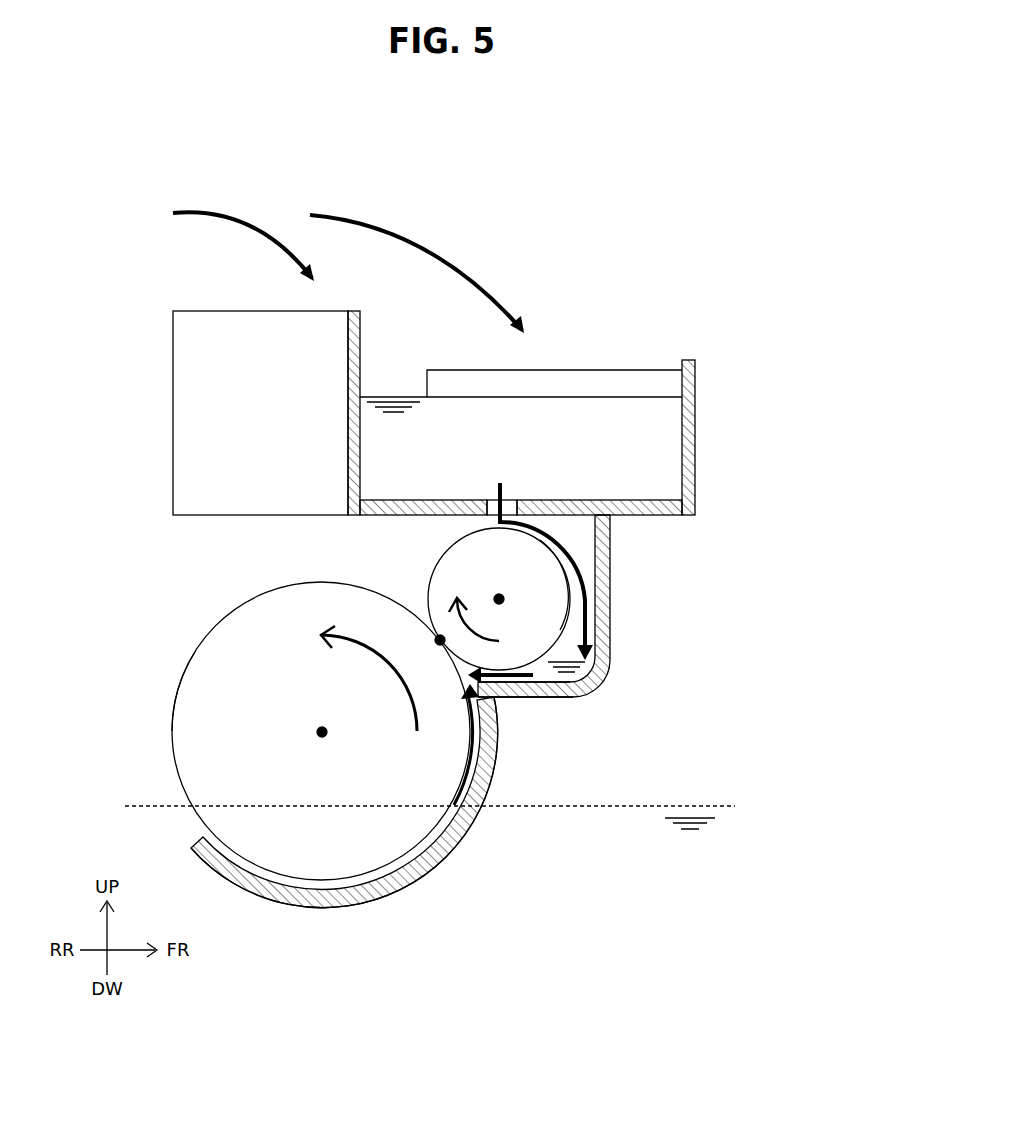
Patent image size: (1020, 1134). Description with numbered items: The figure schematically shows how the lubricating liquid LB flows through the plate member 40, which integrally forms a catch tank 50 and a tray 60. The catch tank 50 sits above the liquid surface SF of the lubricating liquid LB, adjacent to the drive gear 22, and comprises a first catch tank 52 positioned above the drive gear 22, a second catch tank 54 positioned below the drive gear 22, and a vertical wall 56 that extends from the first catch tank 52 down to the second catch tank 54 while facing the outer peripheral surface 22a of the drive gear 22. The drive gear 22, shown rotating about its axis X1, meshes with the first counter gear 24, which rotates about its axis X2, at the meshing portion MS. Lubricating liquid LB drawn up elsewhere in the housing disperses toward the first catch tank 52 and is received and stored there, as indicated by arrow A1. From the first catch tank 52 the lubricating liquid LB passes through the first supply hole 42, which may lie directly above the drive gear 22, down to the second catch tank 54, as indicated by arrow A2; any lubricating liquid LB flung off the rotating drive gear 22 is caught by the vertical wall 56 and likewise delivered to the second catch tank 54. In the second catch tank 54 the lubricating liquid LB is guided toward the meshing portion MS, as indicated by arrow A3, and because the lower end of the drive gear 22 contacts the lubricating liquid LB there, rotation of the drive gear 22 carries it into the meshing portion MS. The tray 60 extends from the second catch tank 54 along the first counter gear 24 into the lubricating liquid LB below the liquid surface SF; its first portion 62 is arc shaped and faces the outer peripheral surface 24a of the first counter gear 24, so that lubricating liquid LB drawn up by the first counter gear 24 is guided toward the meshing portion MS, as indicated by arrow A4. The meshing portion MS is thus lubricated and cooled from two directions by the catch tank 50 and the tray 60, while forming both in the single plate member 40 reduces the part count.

The plate member 40 is at (652, 258).
The catch tank 50 is at (716, 372).
The first catch tank 52 is at (695, 410).
The first supply hole 42 is at (505, 494).
The lubricating liquid LB is at (665, 460).
The vertical wall 56 is at (608, 623).
The second catch tank 54 is at (597, 687).
The drive gear 22 is at (546, 603).
The outer peripheral surface 22a is at (567, 585).
The rotation axis of application roller X1 is at (499, 599).
The meshing portion MS is at (440, 640).
The first counter gear 24 is at (273, 655).
The outer peripheral surface 24a is at (195, 652).
The rotation axis of roller X2 is at (322, 732).
The tray 60 is at (397, 902).
The first portion 62 is at (428, 877).
The liquid surface SF is at (650, 805).
The arrow A1 is at (248, 222).
The arrow A2 is at (558, 540).
The arrow A3 is at (518, 700).
The arrow A4 is at (495, 763).